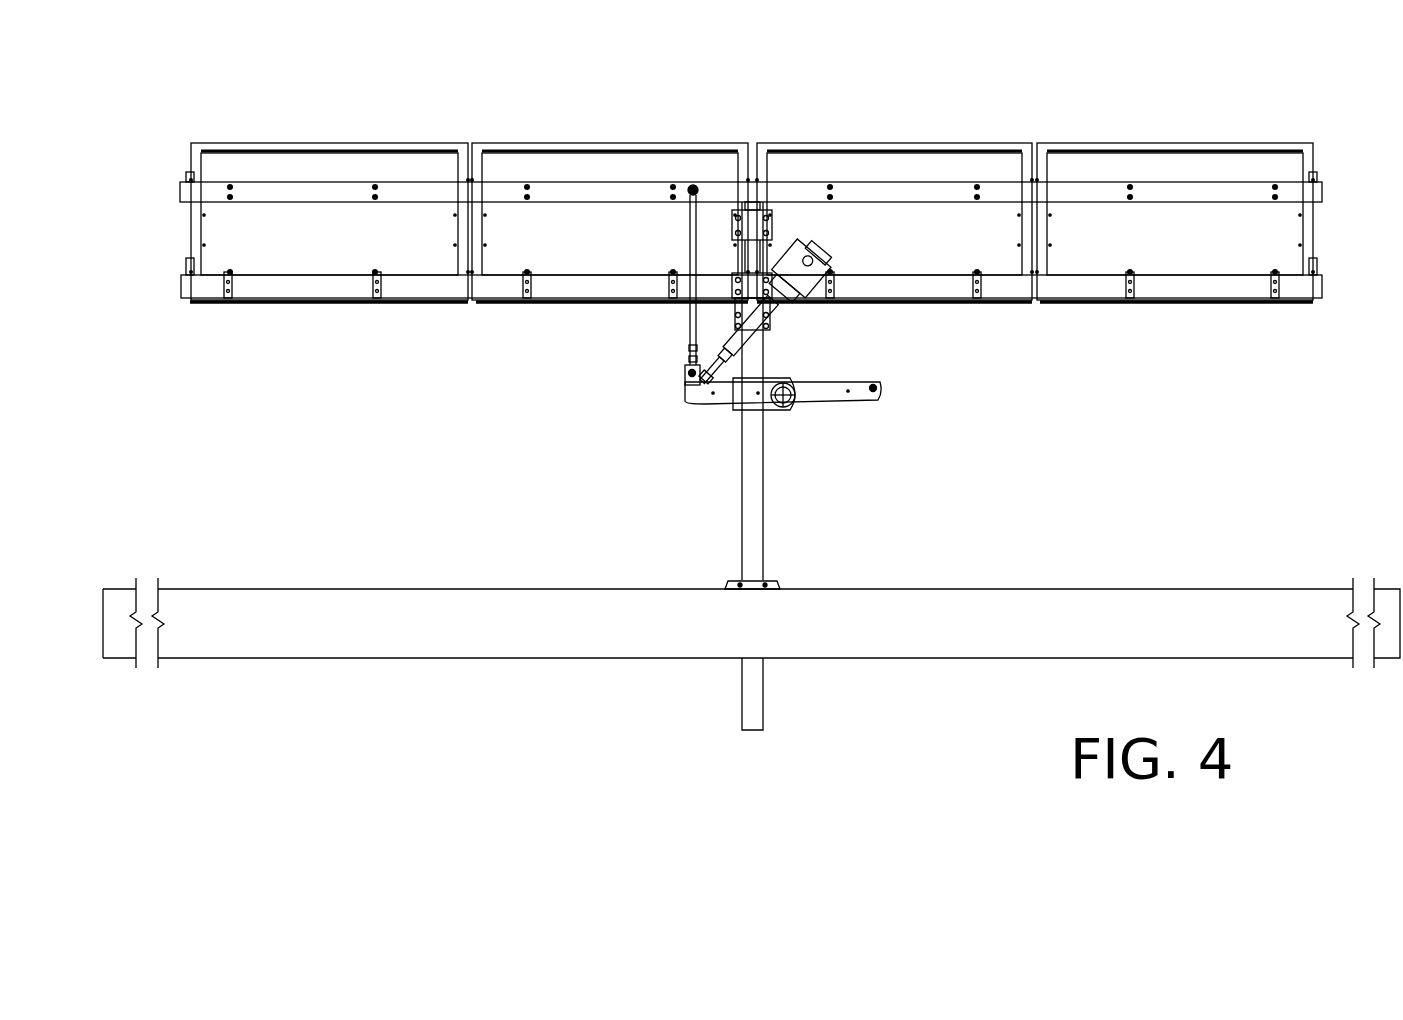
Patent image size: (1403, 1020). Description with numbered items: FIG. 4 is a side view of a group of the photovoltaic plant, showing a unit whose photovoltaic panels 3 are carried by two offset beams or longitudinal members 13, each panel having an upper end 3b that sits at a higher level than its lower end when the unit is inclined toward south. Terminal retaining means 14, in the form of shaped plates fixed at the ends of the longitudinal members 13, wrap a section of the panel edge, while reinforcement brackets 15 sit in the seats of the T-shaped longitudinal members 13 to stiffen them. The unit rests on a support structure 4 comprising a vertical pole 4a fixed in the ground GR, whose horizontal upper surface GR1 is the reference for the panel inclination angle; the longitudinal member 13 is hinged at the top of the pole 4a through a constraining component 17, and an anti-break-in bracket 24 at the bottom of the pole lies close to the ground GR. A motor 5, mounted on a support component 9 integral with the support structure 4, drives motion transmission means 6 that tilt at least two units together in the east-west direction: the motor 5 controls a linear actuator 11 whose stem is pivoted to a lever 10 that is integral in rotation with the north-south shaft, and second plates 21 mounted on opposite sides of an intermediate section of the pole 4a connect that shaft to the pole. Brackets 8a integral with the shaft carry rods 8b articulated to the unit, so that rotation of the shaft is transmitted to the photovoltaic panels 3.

The photovoltaic panel 3 is at (522, 162).
The upper end 3b is at (688, 142).
The longitudinal member 13 is at (402, 190).
The terminal retaining means 14 is at (186, 263).
The reinforcement bracket 15 is at (381, 292).
The constraining component 17 is at (772, 222).
The rod 8b is at (740, 288).
The support component 9 is at (700, 342).
The second plate 21 is at (688, 385).
The bracket 8a is at (704, 396).
The lever 10 is at (840, 400).
The support structure 4 is at (765, 478).
The pole 4a is at (742, 466).
The motor 5 is at (800, 300).
The actuator 11 is at (830, 340).
The motion transmission means 6 is at (868, 416).
The anti-break-in bracket 24 is at (775, 583).
The ground GR is at (1065, 610).
The upper surface GR1 is at (430, 588).